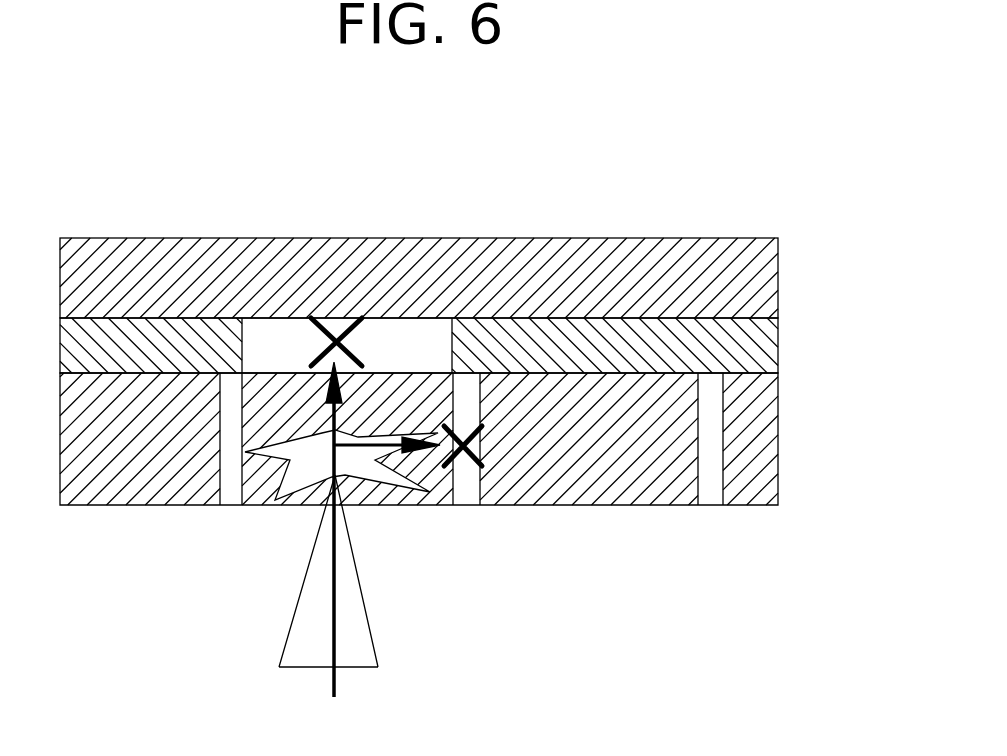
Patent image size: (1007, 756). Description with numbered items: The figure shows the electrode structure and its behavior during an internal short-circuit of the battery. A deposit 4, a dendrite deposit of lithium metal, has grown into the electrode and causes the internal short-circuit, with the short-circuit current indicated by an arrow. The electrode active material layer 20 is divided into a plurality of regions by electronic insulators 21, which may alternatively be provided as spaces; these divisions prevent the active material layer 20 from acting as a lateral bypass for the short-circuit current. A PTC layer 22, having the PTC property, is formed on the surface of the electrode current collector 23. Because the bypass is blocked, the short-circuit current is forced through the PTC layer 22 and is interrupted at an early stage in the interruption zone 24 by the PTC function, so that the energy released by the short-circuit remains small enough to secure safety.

The deposit 4 is at (372, 622).
The electrode active material layer 20 is at (768, 435).
The electronic insulator 21 is at (712, 492).
The PTC layer 22 is at (763, 345).
The electrode current collector 23 is at (765, 273).
The interruption zone 24 is at (392, 340).